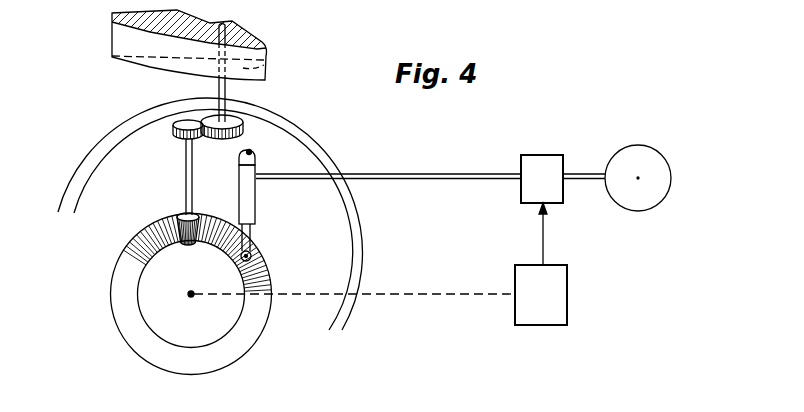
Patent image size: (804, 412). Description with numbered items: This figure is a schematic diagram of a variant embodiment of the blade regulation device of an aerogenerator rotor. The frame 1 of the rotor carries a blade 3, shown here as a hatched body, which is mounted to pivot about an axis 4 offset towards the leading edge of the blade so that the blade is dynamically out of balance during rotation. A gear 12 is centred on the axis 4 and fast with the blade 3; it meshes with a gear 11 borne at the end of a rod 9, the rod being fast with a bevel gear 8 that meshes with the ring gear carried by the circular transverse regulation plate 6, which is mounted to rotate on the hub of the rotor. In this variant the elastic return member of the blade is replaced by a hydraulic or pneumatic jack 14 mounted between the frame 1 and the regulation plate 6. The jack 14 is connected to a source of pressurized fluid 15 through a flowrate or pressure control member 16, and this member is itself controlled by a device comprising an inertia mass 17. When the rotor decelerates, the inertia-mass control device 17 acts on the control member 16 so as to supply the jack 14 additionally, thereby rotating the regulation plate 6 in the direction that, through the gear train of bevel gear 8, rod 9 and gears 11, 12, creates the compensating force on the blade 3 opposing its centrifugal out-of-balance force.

The frame 1 is at (328, 229).
The blade 3 is at (255, 58).
The axis 4 is at (227, 98).
The regulation plate 6 is at (262, 282).
The bevel gear 8 is at (180, 215).
The rod 9 is at (187, 173).
The gear 11 is at (175, 122).
The gear 12 is at (244, 123).
The hydraulic or pneumatic jack 14 is at (250, 208).
The source of pressurized fluid 15 is at (639, 160).
The flowrate or pressure control member 16 is at (537, 170).
The control device comprising an inertia mass 17 is at (557, 285).